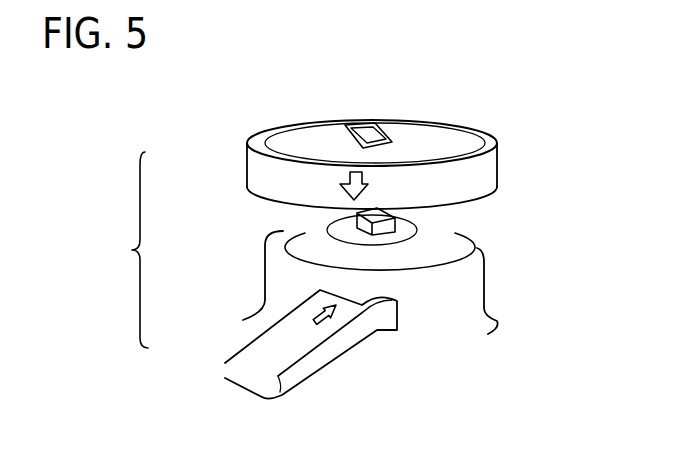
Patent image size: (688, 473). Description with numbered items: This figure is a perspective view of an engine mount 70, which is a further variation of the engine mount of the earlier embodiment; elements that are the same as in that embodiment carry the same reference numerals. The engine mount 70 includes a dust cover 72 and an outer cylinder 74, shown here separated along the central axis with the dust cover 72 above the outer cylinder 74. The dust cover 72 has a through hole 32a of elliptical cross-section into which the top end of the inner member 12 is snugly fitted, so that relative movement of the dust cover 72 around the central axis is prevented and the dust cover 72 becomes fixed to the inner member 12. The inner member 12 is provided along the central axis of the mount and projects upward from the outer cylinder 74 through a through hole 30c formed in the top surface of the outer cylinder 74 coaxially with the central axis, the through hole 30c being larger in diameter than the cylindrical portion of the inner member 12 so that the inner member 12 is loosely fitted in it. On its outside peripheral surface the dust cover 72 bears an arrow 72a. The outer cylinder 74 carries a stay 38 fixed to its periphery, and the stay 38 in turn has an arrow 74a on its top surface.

The engine mount 70 is at (120, 250).
The dust cover 72 is at (505, 158).
The arrow 72a is at (362, 178).
The through hole 32a is at (377, 123).
The through hole 30c is at (327, 228).
The inner member 12 is at (430, 224).
The outer cylinder 74 is at (472, 292).
The arrow 74a is at (317, 311).
The stay 38 is at (325, 360).